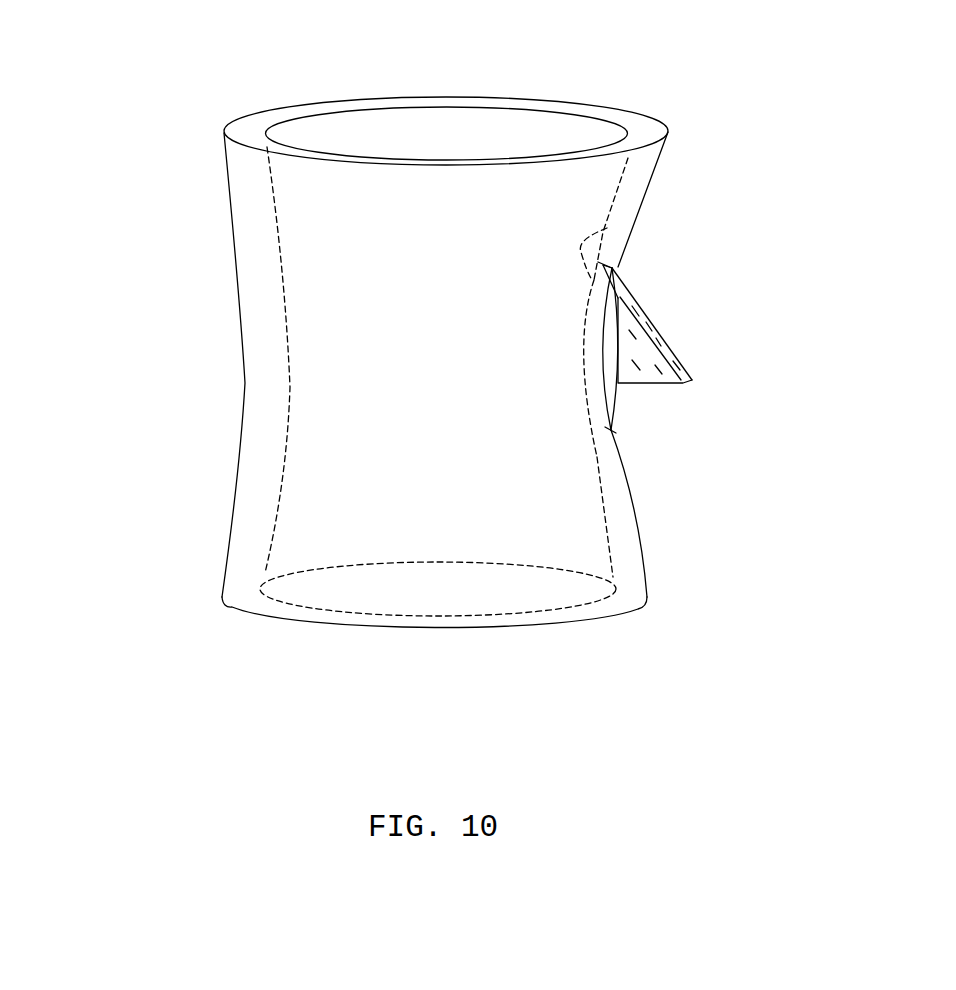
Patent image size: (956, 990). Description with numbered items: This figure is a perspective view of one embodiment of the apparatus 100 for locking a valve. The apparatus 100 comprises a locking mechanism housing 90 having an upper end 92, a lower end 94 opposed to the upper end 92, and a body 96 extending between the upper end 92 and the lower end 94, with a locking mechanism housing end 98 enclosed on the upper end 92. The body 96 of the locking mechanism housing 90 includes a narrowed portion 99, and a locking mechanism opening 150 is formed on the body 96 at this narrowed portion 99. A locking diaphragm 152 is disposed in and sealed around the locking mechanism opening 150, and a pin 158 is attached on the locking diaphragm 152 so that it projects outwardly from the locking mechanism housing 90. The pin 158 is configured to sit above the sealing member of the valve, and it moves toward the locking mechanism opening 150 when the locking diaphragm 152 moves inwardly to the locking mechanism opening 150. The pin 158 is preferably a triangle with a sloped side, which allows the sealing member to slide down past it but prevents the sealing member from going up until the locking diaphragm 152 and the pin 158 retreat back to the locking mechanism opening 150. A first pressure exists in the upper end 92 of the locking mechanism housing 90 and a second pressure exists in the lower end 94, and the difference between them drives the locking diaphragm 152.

The locking mechanism housing 90 is at (186, 169).
The upper end 92 is at (240, 134).
The lower end 94 is at (292, 605).
The body 96 is at (257, 247).
The locking mechanism housing end 98 is at (607, 462).
The narrowed portion 99 is at (258, 370).
The apparatus 100 is at (650, 96).
The locking mechanism opening 150 is at (605, 227).
The locking diaphragm 152 is at (617, 396).
The pin 158 is at (692, 380).